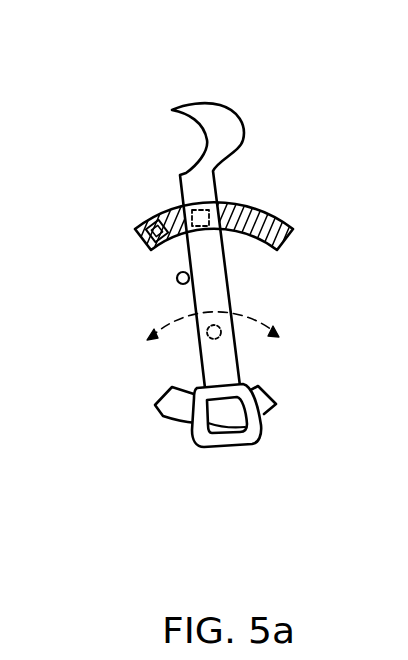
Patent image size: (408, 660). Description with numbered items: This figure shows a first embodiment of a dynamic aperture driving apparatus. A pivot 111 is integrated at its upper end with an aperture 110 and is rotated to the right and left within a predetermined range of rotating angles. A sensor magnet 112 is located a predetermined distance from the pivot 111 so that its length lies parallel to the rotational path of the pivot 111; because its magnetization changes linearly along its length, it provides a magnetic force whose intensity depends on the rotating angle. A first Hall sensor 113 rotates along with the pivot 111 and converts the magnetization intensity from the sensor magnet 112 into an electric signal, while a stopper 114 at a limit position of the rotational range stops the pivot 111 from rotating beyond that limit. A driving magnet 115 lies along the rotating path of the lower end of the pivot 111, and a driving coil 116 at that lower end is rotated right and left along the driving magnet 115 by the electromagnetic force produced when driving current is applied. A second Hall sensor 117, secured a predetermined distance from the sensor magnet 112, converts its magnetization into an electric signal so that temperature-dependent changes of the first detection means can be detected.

The aperture 110 is at (247, 93).
The pivot 111 is at (182, 200).
The sensor magnet 112 is at (168, 247).
The first Hall sensor 113 is at (192, 212).
The stopper 114 is at (177, 279).
The driving magnet 115 is at (156, 398).
The driving coil 116 is at (213, 442).
The second Hall sensor 117 is at (148, 229).